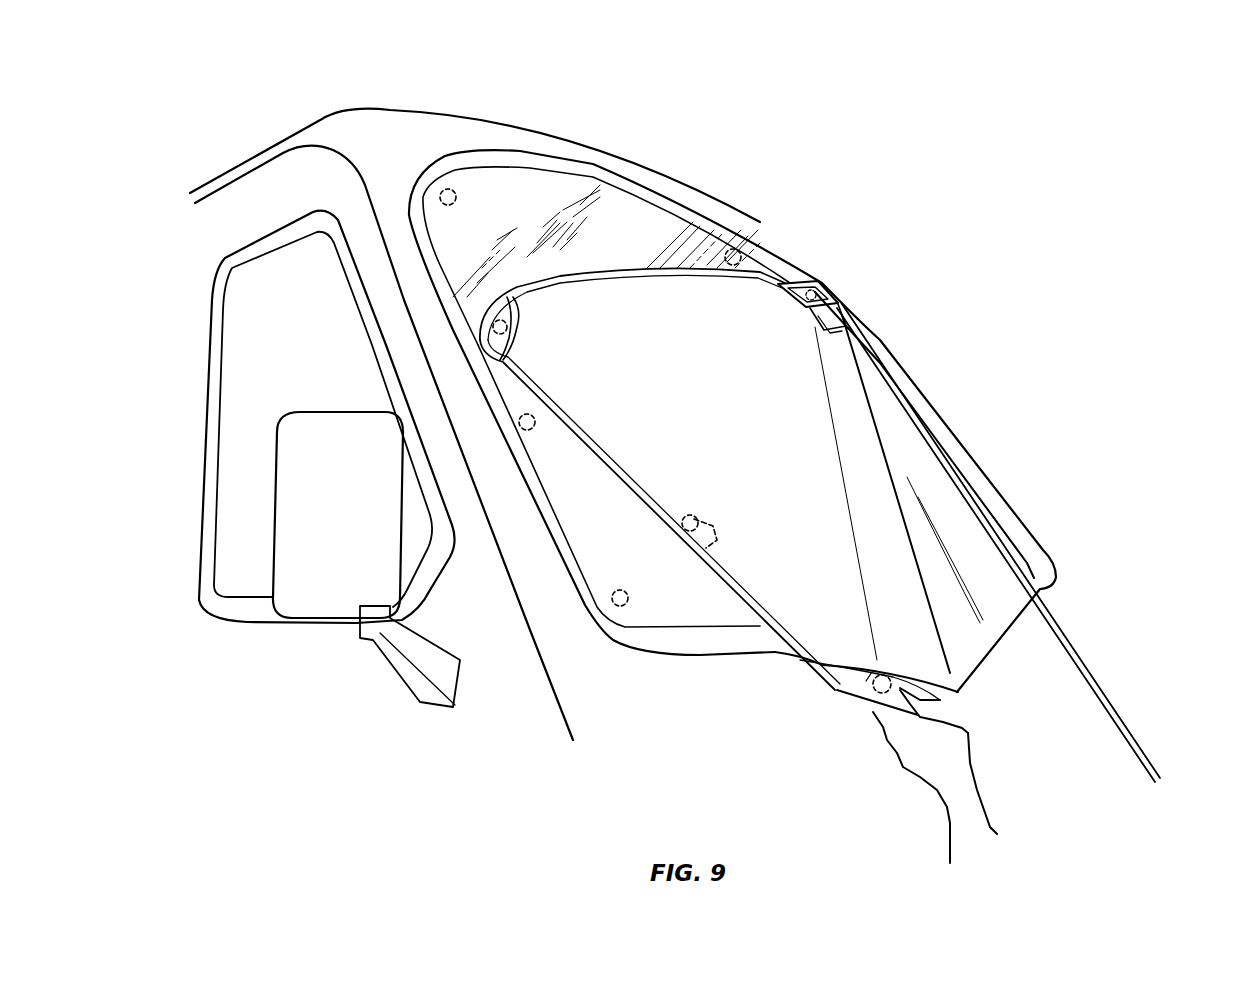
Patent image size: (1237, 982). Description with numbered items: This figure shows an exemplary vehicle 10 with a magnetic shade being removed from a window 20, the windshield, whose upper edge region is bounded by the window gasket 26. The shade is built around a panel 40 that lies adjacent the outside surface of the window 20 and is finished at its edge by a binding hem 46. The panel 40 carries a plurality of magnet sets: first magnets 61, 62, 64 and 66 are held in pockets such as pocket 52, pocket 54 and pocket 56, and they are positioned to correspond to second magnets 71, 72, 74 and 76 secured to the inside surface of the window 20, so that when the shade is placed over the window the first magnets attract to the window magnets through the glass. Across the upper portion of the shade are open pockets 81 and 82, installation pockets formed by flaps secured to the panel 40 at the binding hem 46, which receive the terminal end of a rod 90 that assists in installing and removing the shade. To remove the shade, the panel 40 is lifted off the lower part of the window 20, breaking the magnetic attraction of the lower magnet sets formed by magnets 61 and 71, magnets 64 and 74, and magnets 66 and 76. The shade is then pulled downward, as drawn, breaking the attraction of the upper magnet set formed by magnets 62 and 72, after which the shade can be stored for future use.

The vehicle 10 is at (322, 92).
The window 20 is at (637, 230).
The window gasket 26 is at (637, 188).
The panel 40 is at (800, 425).
The binding hem 46 is at (792, 276).
The pocket 52 is at (836, 292).
The pocket 54 is at (682, 512).
The pocket 56 is at (866, 681).
The first magnet 61 is at (508, 327).
The first magnet 62 is at (824, 284).
The first magnet 64 is at (700, 521).
The first magnet 66 is at (873, 693).
The second magnet 71 is at (462, 198).
The second magnet 72 is at (745, 253).
The second magnet 74 is at (529, 431).
The second magnet 76 is at (618, 606).
The open pocket 81 is at (512, 312).
The open pocket 82 is at (835, 320).
The rod 90 is at (1067, 640).